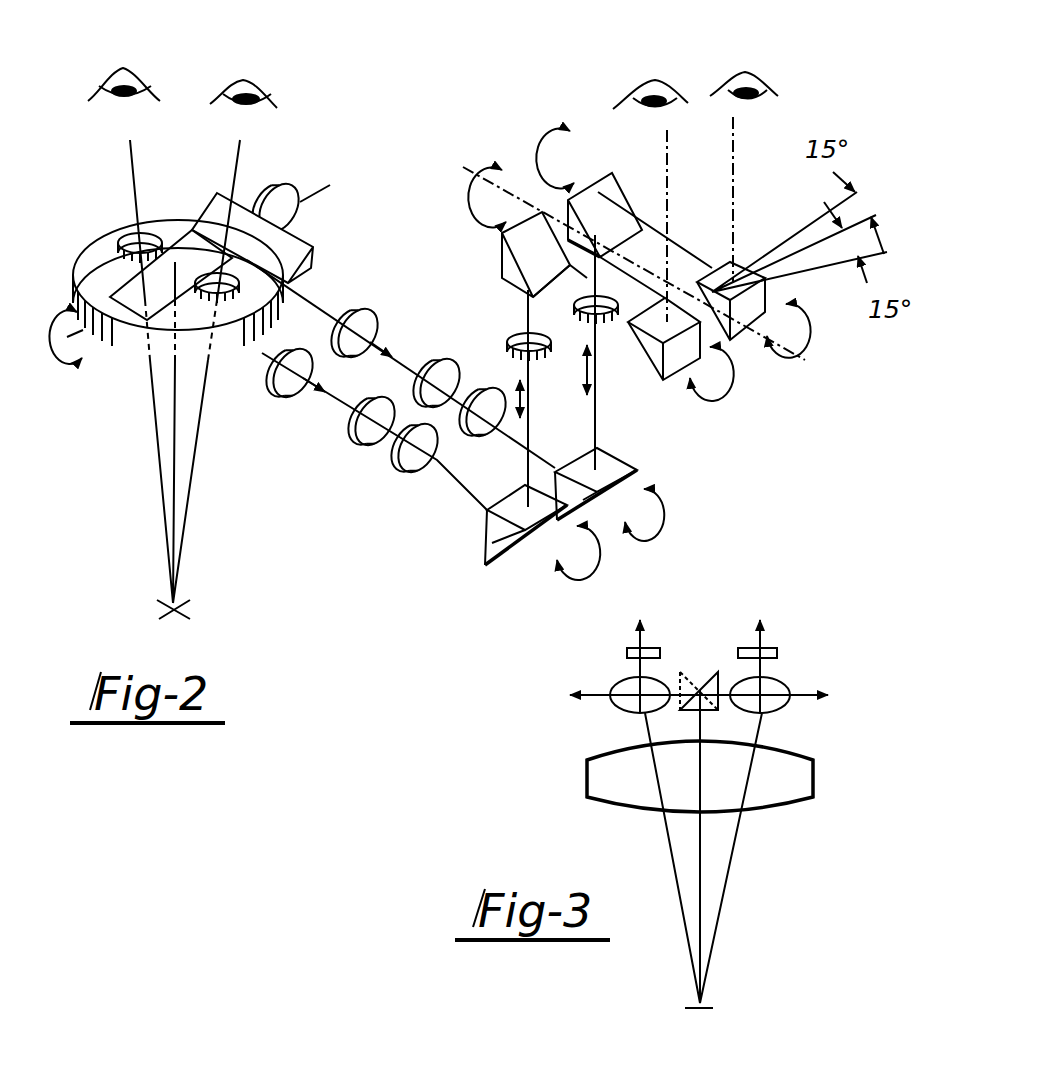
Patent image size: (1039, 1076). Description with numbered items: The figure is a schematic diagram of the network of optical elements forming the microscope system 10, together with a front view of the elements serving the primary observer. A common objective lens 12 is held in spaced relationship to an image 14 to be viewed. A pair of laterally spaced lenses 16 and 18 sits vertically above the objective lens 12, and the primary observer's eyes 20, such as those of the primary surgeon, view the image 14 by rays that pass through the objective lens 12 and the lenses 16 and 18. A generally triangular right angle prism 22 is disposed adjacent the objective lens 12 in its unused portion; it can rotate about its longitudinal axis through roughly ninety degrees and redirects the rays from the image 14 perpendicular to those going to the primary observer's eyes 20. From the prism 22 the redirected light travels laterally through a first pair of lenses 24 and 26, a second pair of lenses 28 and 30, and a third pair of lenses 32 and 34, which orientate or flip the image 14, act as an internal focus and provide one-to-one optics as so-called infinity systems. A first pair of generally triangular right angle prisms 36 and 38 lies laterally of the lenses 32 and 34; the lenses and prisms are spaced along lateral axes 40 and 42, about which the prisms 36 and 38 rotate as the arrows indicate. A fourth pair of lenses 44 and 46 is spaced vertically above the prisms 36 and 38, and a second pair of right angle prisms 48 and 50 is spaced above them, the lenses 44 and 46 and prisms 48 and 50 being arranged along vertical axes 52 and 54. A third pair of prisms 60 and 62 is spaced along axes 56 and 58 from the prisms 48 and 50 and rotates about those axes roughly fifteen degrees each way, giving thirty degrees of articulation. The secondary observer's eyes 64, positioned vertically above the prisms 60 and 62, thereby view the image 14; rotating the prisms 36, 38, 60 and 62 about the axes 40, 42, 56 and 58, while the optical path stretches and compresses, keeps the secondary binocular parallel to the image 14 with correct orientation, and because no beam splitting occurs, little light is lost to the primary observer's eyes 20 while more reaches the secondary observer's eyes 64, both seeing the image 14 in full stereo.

In FIG. 2, the microscope system 10 is at (137, 466).
In FIG. 2, the common objective lens 12 is at (88, 268).
In FIG. 3, the common objective lens 12 is at (793, 773).
In FIG. 3, the image 14 is at (697, 1010).
In FIG. 2, the lens 16 is at (133, 240).
In FIG. 3, the lens 16 is at (627, 652).
In FIG. 2, the lens 18 is at (233, 298).
In FIG. 3, the lens 18 is at (777, 652).
In FIG. 2, the primary observer's eyes 20 is at (228, 97).
In FIG. 2, the right angle prism 22 is at (184, 262).
In FIG. 3, the right angle prism 22 is at (700, 690).
In FIG. 2, the lens 24 is at (298, 378).
In FIG. 2, the lens 26 is at (365, 323).
In FIG. 2, the lens 28 is at (371, 432).
In FIG. 2, the lens 30 is at (441, 372).
In FIG. 2, the lens 32 is at (414, 460).
In FIG. 2, the lens 34 is at (490, 420).
In FIG. 2, the right angle prism 36 is at (485, 560).
In FIG. 2, the right angle prism 38 is at (638, 469).
In FIG. 2, the lateral axis 40 is at (482, 490).
In FIG. 2, the lateral axis 42 is at (556, 450).
In FIG. 2, the lens 44 is at (522, 345).
In FIG. 2, the lens 46 is at (602, 316).
In FIG. 2, the right angle prism 48 is at (502, 233).
In FIG. 2, the right angle prism 50 is at (637, 150).
In FIG. 2, the vertical axis 52 is at (532, 298).
In FIG. 2, the vertical axis 54 is at (598, 432).
In FIG. 2, the axis 56 is at (586, 275).
In FIG. 2, the axis 58 is at (653, 232).
In FIG. 2, the prism 60 is at (675, 322).
In FIG. 2, the prism 62 is at (762, 302).
In FIG. 2, the secondary observer's eyes 64 is at (727, 94).